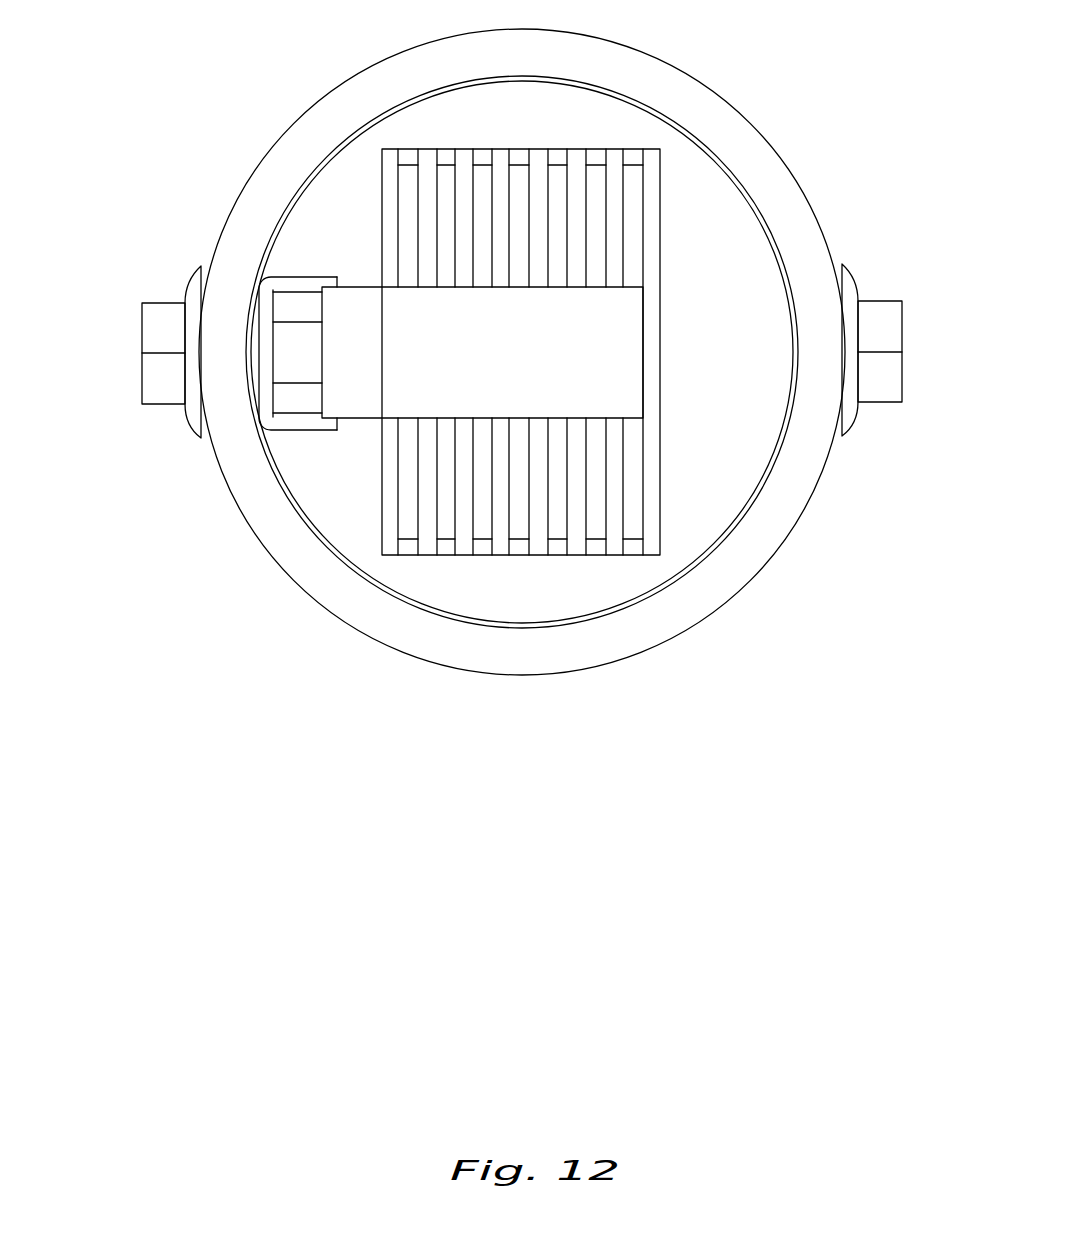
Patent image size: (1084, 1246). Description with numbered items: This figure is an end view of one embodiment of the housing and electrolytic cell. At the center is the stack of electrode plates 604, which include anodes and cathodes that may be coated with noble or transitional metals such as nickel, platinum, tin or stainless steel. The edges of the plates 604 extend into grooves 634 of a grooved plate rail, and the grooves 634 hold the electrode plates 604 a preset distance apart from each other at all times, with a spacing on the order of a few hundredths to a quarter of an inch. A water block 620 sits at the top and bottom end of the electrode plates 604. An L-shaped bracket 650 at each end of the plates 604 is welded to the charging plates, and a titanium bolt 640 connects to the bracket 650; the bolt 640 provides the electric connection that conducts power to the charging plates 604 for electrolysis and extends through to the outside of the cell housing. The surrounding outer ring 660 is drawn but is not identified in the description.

The electrode plates 604 is at (608, 469).
The water block 620 is at (716, 225).
The grooves 634 is at (447, 546).
The titanium bolt 640 is at (141, 331).
The L-shaped bracket 650 is at (365, 397).
The outer ring 660 is at (368, 98).